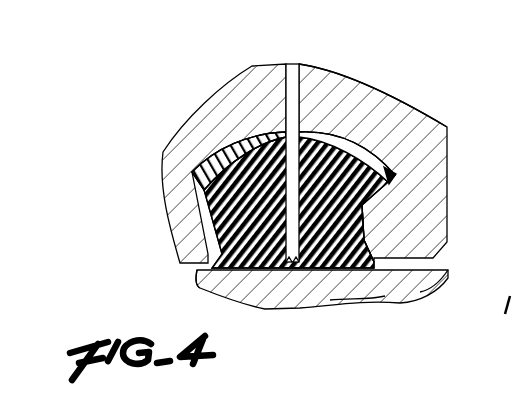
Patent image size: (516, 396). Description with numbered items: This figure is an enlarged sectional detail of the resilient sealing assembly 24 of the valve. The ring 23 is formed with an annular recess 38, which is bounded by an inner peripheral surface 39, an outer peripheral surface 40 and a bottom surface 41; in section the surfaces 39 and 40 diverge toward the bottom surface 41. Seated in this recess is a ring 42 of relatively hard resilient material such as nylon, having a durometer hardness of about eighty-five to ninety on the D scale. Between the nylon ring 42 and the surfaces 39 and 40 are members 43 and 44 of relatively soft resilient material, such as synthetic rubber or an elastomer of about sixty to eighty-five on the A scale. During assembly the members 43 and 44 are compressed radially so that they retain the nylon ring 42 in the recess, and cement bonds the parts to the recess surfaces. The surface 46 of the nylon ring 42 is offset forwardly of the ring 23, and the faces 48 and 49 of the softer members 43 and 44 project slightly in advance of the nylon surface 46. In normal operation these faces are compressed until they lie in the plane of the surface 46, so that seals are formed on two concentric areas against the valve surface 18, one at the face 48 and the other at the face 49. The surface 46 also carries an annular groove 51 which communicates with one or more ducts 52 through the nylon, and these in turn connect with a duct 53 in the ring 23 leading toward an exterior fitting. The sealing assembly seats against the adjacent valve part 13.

The plate 13 is at (406, 294).
The valve surface 18 is at (428, 278).
The ring 23 is at (214, 108).
The sealing assembly 24 is at (320, 142).
The annular recess 38 is at (355, 145).
The inner peripheral surface 39 is at (365, 223).
The outer peripheral surface 40 is at (206, 233).
The bottom surface 41 is at (240, 150).
The ring 42 is at (361, 128).
The member 43 is at (372, 244).
The member 44 is at (194, 178).
The surface 46 is at (324, 272).
The face 48 is at (358, 294).
The face 49 is at (202, 288).
The annular groove 51 is at (290, 270).
The duct 52 is at (262, 272).
The duct 53 is at (296, 72).